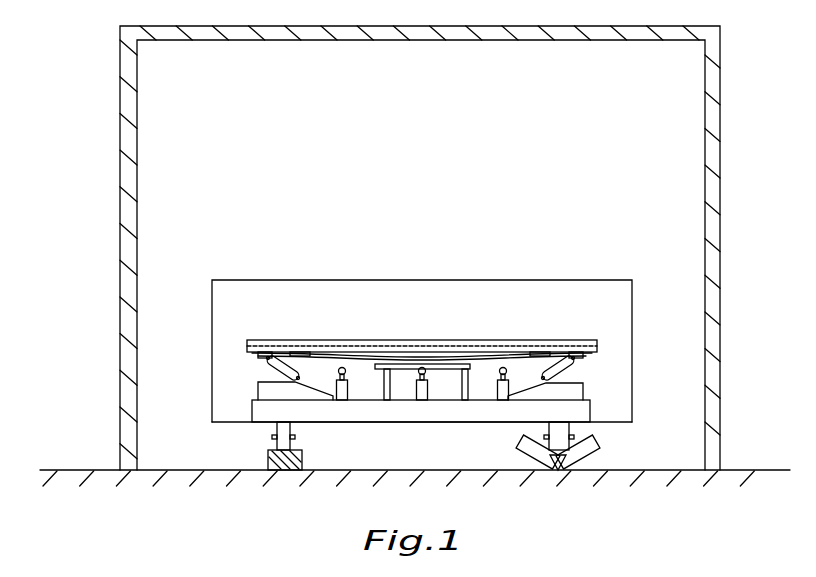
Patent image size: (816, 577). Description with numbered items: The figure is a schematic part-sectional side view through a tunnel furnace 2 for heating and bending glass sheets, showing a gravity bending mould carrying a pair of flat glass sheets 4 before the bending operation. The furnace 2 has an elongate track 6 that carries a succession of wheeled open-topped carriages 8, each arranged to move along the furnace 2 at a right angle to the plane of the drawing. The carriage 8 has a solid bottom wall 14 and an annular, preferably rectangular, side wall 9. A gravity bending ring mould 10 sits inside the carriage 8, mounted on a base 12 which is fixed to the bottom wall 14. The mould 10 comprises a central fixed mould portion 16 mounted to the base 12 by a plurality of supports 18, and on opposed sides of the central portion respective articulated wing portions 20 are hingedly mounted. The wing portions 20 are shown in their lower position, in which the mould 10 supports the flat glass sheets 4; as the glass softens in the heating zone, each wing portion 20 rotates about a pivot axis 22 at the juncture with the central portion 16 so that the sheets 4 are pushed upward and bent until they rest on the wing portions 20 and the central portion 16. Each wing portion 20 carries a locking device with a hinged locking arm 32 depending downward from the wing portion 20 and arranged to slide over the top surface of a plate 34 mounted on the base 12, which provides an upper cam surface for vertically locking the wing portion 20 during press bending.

The tunnel furnace 2 is at (667, 33).
The glass sheets 4 is at (562, 352).
The elongate track 6 is at (290, 471).
The carriage 8 is at (632, 378).
The side wall 9 is at (632, 290).
The gravity bending ring mould 10 is at (407, 364).
The base 12 is at (593, 415).
The bottom wall 14 is at (233, 423).
The central fixed mould portion 16 is at (475, 353).
The supports 18 is at (380, 385).
The articulated wing portions 20 is at (262, 355).
The pivot axis 22 is at (300, 353).
The hinged locking arm 32 is at (272, 366).
The plate 34 is at (257, 388).